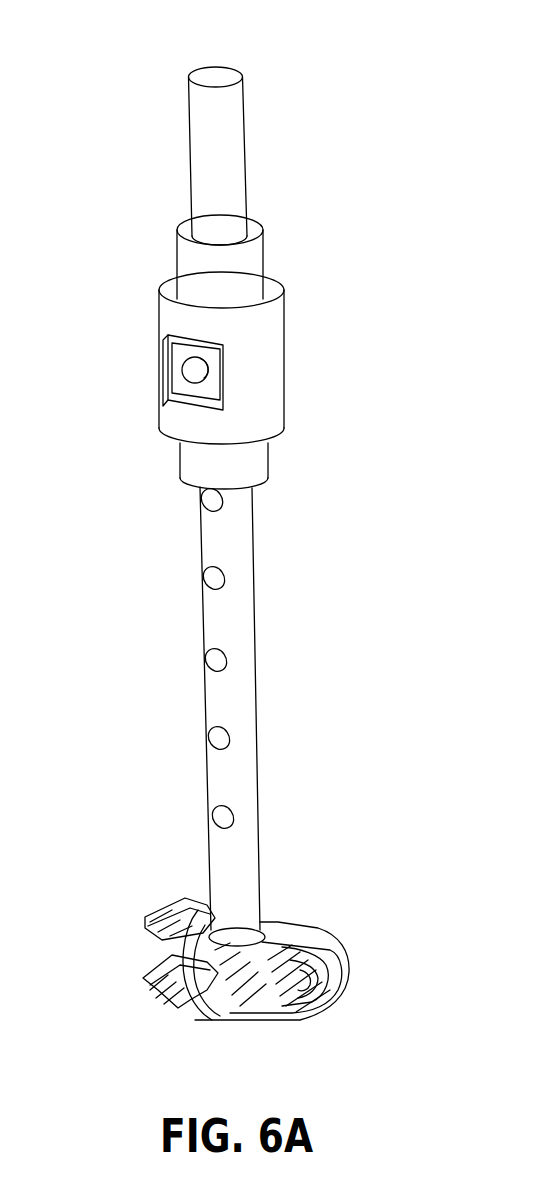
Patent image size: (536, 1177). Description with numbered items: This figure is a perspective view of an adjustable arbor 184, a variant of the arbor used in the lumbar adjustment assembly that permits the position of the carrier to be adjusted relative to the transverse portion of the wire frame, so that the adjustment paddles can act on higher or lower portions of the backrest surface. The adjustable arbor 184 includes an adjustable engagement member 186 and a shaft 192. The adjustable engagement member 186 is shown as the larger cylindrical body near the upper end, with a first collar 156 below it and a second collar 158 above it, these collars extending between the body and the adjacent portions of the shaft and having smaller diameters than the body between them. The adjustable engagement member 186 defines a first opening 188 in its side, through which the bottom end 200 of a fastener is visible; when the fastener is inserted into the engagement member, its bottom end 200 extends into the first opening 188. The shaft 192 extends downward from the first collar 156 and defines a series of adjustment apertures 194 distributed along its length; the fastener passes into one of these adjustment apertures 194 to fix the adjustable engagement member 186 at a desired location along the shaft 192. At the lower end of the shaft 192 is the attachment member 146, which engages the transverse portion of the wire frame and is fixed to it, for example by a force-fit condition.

The adjustable arbor 184 is at (326, 67).
The second collar 158 is at (257, 258).
The adjustable engagement member 186 is at (273, 360).
The first opening 188 is at (163, 395).
The bottom end 200 is at (193, 372).
The first collar 156 is at (258, 457).
The shaft 192 is at (217, 617).
The adjustment apertures 194 is at (215, 738).
The attachment member 146 is at (293, 943).